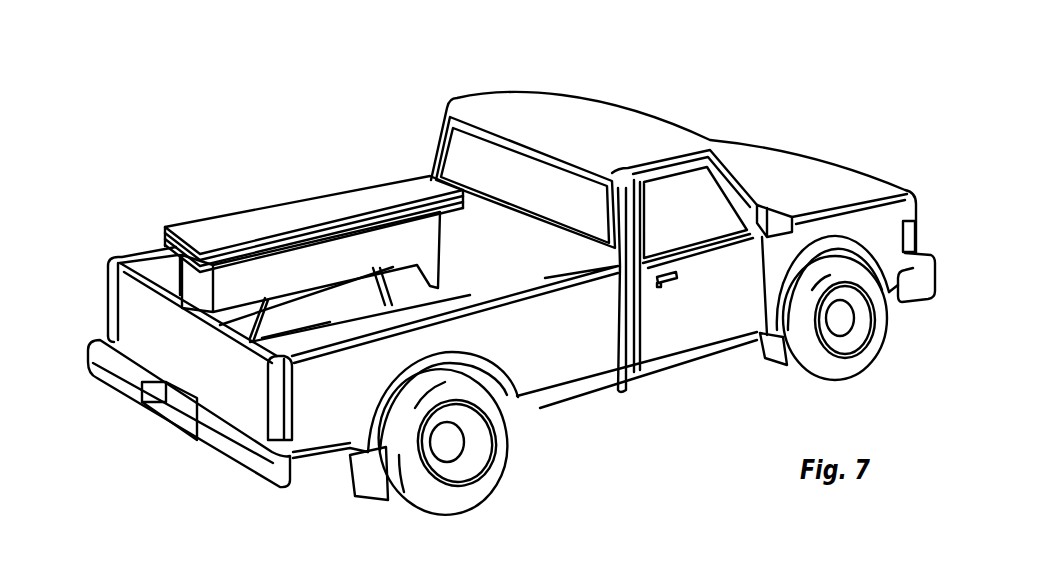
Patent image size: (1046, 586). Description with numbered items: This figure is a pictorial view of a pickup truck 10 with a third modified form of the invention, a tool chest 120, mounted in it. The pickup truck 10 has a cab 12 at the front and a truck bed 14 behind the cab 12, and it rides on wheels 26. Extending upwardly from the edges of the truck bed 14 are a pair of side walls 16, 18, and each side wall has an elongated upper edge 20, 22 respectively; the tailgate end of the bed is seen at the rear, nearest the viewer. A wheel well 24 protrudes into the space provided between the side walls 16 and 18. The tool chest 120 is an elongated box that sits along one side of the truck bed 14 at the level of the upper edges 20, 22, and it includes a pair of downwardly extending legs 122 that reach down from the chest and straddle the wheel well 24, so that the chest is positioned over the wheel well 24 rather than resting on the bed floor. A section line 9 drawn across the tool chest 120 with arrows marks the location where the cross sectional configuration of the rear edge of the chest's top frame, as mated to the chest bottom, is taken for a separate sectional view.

The pickup truck 10 is at (492, 296).
The cab 12 is at (682, 330).
The truck bed 14 is at (450, 325).
The side wall 16 is at (162, 270).
The side wall 18 is at (553, 372).
The upper edge 20 is at (137, 254).
The upper edge 22 is at (583, 278).
The wheel well 24 is at (307, 312).
The wheels 26 is at (867, 358).
The tool chest 120 is at (226, 206).
The legs 122 is at (227, 327).
The section line 9- 9 is at (303, 181).